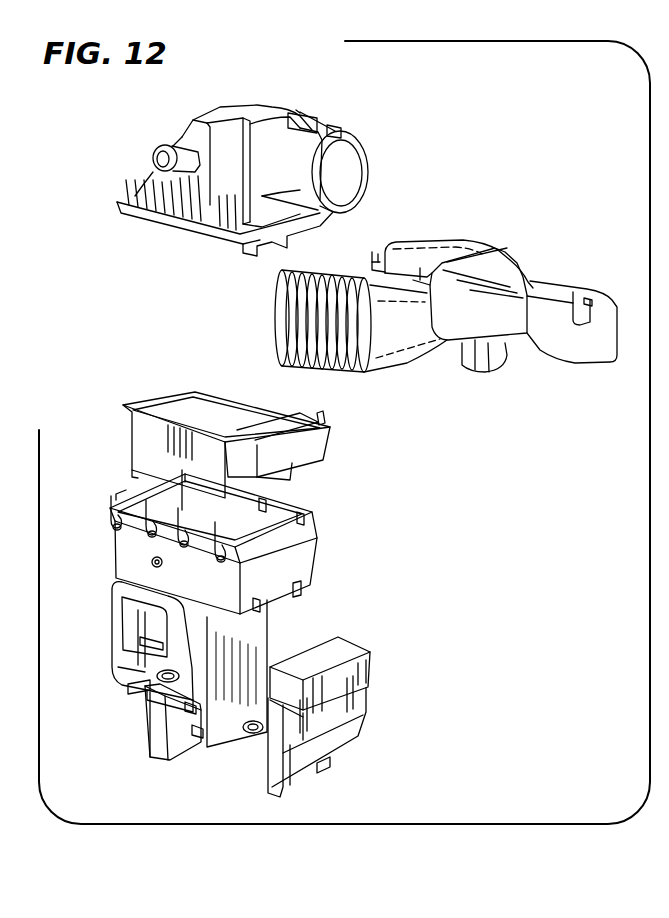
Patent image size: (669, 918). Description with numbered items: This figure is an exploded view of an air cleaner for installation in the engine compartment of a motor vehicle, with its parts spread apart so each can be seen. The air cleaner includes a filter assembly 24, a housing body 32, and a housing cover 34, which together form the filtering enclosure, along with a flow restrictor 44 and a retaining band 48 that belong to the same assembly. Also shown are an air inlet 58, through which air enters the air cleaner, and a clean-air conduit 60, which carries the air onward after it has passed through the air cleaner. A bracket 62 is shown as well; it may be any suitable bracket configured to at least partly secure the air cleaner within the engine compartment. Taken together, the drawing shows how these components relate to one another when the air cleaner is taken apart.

The filter assembly 24 is at (338, 447).
The housing body 32 is at (307, 561).
The housing cover 34 is at (250, 108).
The flow restrictor 44 is at (370, 697).
The retaining band 48 is at (302, 757).
The air inlet 58 is at (135, 615).
The clean-air conduit 60 is at (397, 363).
The bracket 62 is at (150, 727).